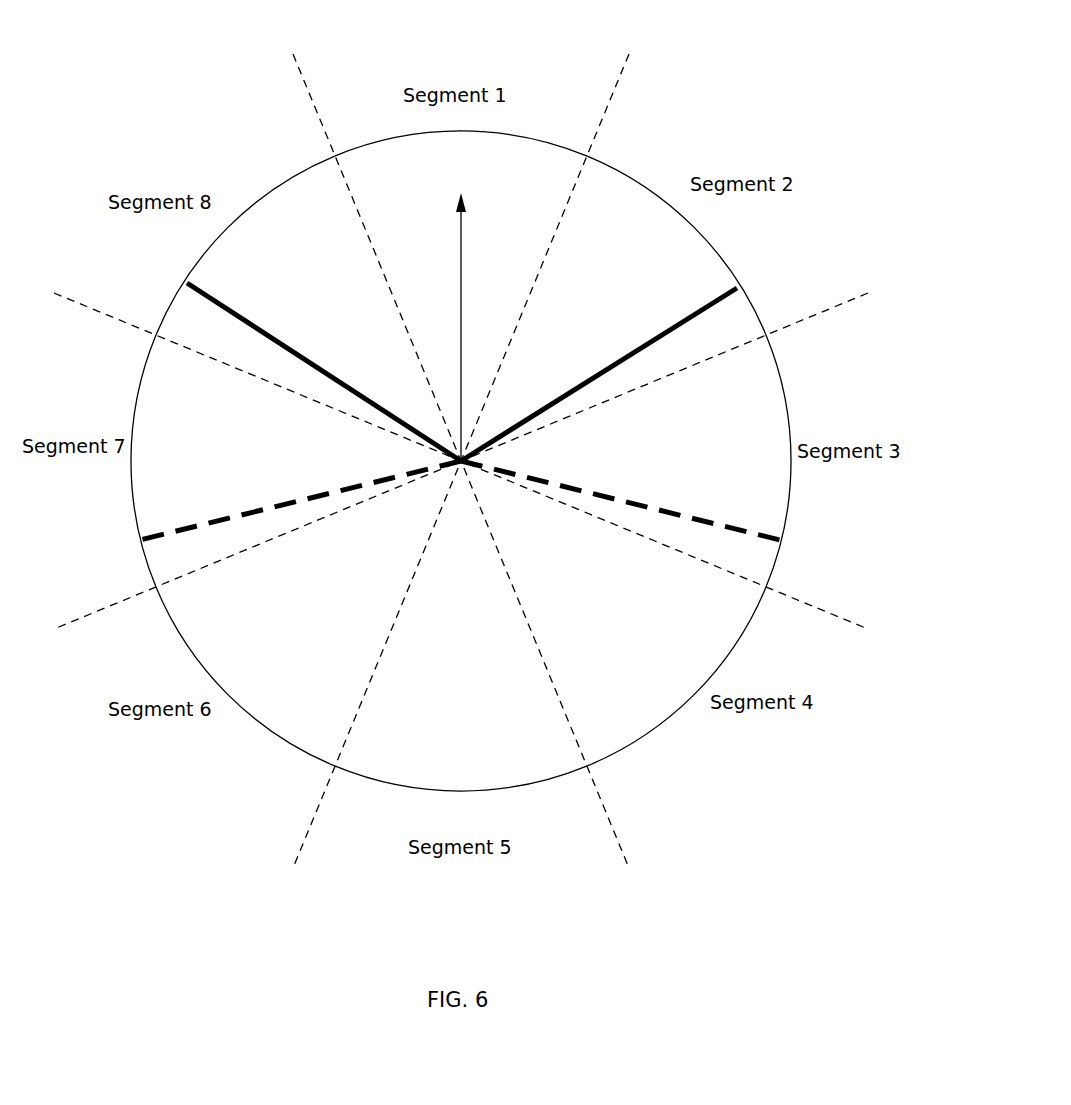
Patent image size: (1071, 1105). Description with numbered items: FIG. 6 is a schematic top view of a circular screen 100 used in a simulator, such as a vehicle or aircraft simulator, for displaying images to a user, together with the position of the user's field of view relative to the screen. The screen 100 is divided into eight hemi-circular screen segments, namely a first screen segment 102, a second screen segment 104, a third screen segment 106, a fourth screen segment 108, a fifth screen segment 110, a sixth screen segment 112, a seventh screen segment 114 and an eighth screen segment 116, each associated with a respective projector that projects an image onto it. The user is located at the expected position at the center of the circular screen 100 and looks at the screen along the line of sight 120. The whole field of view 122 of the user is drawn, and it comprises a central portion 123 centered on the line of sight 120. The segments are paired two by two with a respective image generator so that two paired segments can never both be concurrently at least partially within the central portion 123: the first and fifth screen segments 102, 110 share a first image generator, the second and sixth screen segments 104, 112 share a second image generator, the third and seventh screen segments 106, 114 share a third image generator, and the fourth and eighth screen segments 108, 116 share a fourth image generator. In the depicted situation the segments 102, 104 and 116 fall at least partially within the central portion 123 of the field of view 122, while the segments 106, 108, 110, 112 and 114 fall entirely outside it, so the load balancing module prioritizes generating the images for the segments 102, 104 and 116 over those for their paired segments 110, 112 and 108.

The circular screen 100 is at (733, 69).
The first screen segment 102 is at (401, 135).
The second screen segment 104 is at (616, 166).
The third screen segment 106 is at (789, 408).
The fourth screen segment 108 is at (650, 731).
The fifth screen segment 110 is at (405, 789).
The sixth screen segment 112 is at (277, 743).
The seventh screen segment 114 is at (136, 529).
The eighth screen segment 116 is at (286, 181).
The line of sight 120 is at (465, 272).
The field of view 122 is at (651, 506).
The central portion 123 is at (637, 346).